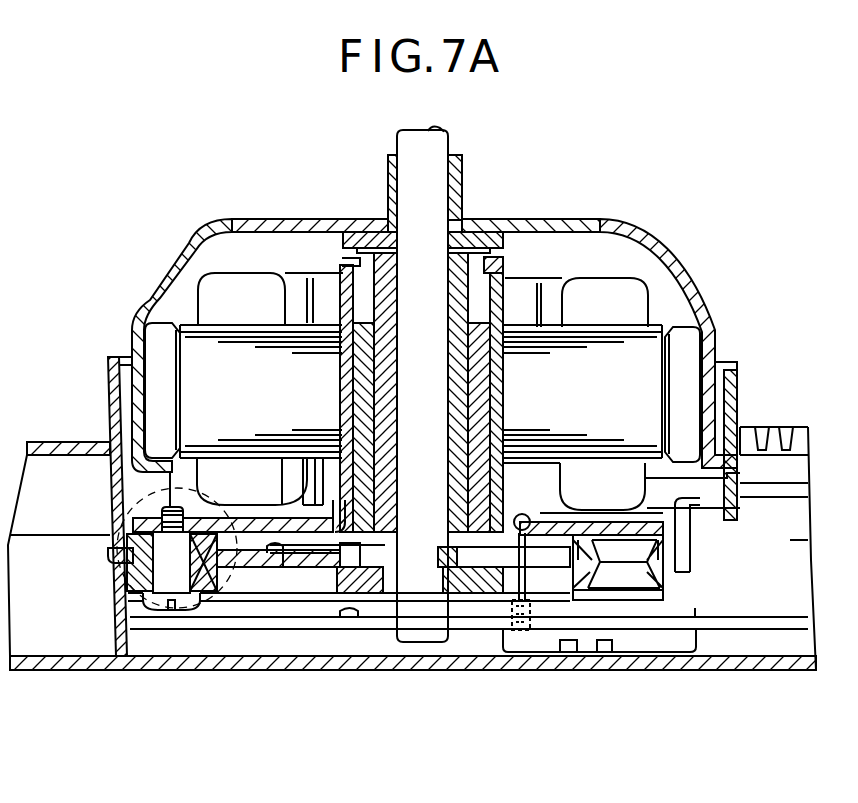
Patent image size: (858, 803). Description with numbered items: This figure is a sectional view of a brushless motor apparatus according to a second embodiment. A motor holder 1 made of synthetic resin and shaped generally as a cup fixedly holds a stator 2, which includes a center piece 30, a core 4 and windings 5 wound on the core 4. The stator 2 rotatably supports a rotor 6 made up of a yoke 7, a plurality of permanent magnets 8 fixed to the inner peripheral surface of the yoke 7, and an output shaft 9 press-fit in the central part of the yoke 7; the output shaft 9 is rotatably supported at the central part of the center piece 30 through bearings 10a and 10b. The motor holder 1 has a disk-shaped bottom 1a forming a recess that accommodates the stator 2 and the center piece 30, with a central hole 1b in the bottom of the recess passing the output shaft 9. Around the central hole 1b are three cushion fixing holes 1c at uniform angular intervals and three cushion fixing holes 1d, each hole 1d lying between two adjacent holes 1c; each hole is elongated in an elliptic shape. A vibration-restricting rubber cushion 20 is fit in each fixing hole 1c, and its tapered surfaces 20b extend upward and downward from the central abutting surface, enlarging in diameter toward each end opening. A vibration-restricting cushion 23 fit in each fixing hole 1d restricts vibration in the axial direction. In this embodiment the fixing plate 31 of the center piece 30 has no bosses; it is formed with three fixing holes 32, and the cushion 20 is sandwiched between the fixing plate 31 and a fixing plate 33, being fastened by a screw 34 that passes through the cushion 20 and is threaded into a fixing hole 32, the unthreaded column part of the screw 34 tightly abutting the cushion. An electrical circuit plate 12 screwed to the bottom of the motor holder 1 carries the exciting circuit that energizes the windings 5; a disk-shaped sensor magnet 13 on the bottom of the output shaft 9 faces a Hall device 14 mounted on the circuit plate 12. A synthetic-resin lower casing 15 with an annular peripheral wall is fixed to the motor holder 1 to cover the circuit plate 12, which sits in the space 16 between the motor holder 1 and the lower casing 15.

The motor holder 1 is at (60, 443).
The disk-shaped bottom 1a is at (283, 556).
The central hole 1b is at (383, 560).
The cushion fixing hole 1c is at (108, 557).
The cushion fixing hole 1d is at (660, 552).
The stator 2 is at (660, 283).
The core 4 is at (660, 326).
The windings 5 is at (610, 285).
The rotor 6 is at (209, 200).
The yoke 7 is at (310, 218).
The permanent magnets 8 is at (140, 340).
The output shaft 9 is at (450, 141).
The bearing 10a is at (364, 232).
The bearing 10b is at (380, 437).
The electrical circuit plate 12 is at (780, 633).
The sensor magnet 13 is at (480, 592).
The Hall device 14 is at (353, 610).
The lower casing 15 is at (797, 673).
The space 16 is at (718, 660).
The vibration-restricting cushion 20 is at (110, 537).
The tapered surface 20b is at (125, 585).
The vibration-restricting cushion 23 is at (668, 580).
The center piece 30 is at (508, 290).
The fixing plate 31 is at (252, 520).
The fixing hole 32 is at (160, 512).
The fixing plate 33 is at (210, 602).
The screw 34 is at (150, 602).